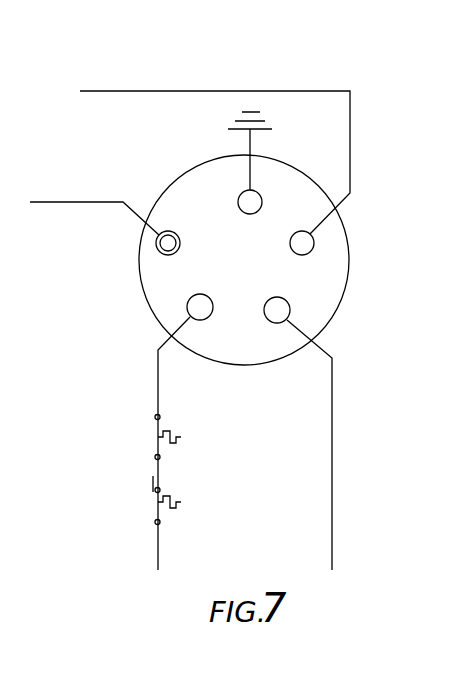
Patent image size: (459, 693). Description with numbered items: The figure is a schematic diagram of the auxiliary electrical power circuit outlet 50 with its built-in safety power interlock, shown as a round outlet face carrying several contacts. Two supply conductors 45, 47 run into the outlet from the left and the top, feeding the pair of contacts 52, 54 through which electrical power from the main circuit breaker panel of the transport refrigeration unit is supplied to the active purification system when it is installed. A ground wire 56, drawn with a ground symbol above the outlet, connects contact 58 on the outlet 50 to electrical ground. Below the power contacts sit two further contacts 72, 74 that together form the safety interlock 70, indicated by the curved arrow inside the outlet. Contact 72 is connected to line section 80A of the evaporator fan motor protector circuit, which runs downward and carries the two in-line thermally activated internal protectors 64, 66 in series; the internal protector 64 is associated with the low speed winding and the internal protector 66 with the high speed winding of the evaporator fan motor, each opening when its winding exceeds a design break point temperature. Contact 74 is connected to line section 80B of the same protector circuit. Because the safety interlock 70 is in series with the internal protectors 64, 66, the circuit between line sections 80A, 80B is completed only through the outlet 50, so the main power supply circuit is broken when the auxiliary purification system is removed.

The power supply line 45 is at (172, 90).
The signal line 47 is at (84, 201).
The auxiliary electrical power circuit outlet 50 is at (351, 252).
The contact 52 is at (290, 243).
The contact 54 is at (170, 231).
The ground wire 56 is at (250, 141).
The contact 58 is at (261, 195).
The internal protector 64 is at (157, 497).
The internal protector 66 is at (157, 446).
The safety interlock 70 is at (240, 321).
The contact 72 is at (188, 303).
The contact 74 is at (290, 304).
The line section 80A is at (157, 378).
The line section 80B is at (331, 385).